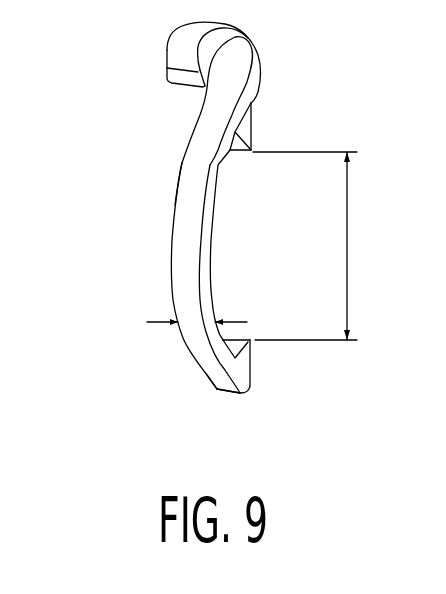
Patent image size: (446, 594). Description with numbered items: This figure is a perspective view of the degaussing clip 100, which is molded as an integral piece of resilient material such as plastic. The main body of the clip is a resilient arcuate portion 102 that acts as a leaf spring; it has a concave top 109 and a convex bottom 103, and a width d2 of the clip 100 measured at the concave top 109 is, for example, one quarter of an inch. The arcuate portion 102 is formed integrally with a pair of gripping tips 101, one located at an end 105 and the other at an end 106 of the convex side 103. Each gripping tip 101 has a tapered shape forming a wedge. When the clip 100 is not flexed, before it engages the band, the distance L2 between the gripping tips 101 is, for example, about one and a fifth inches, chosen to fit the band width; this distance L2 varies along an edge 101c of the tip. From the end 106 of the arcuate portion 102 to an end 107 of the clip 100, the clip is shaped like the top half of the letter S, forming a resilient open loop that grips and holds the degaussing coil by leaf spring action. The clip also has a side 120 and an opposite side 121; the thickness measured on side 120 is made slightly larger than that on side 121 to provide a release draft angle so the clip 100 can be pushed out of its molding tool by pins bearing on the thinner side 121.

The degaussing clip 100 is at (187, 171).
The gripping tip 101 is at (253, 128).
The edge 101c is at (237, 155).
The resilient arcuate portion 102 is at (180, 229).
The convex bottom 103 is at (212, 268).
The end 105 is at (247, 362).
The end 106 is at (240, 122).
The end of clip 107 is at (183, 86).
The concave top 109 is at (202, 348).
The side 120 is at (210, 212).
The side 121 is at (172, 212).
The width d2 is at (190, 335).
The distance L2 is at (313, 246).